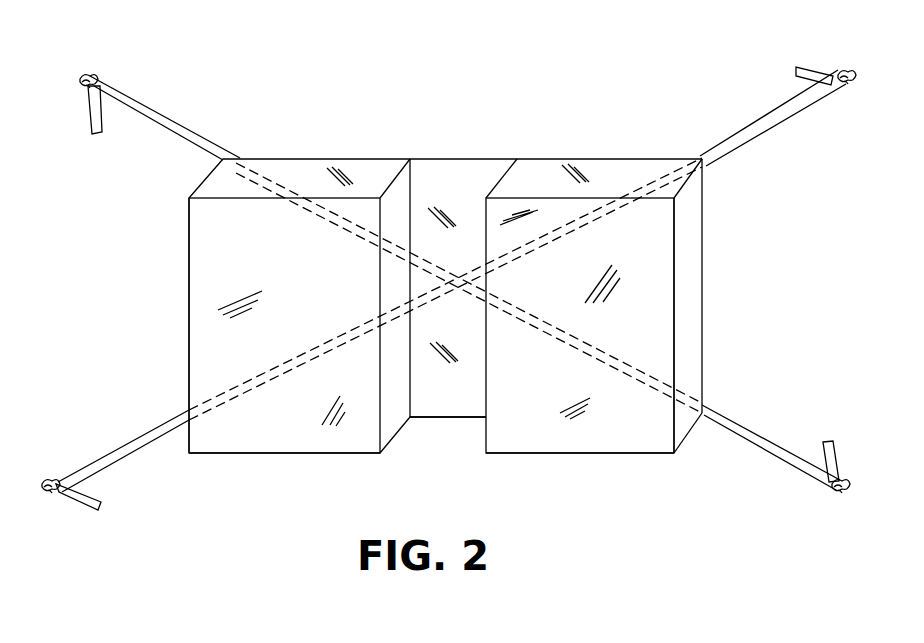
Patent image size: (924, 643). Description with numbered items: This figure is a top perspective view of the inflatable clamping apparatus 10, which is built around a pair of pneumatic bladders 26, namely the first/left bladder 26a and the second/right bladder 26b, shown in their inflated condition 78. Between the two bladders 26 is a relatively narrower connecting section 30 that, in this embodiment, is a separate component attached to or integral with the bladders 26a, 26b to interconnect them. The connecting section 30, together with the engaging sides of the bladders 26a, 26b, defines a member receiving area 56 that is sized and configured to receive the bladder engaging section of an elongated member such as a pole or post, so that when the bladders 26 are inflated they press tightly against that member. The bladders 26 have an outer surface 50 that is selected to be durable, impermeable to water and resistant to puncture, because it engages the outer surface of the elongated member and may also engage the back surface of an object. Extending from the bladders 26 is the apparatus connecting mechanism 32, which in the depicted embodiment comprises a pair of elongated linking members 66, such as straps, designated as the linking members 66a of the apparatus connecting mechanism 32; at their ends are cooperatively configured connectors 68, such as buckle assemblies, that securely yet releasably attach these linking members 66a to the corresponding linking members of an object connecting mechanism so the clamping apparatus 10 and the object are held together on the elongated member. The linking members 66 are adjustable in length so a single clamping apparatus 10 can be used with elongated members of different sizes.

The inflatable clamping apparatus 10 is at (439, 294).
The pneumatic bladder 26 is at (391, 274).
The first/left bladder 26a is at (305, 172).
The second/right bladder 26b is at (615, 178).
The connecting section 30 is at (455, 392).
The apparatus connecting mechanism 32 is at (439, 294).
The outer surface 50 is at (250, 264).
The member receiving area 56 is at (457, 182).
The elongated linking member 66 is at (449, 294).
The linking member of the apparatus connecting mechanism 66a is at (188, 134).
The connector 68 is at (90, 74).
The inflated condition 78 is at (251, 473).